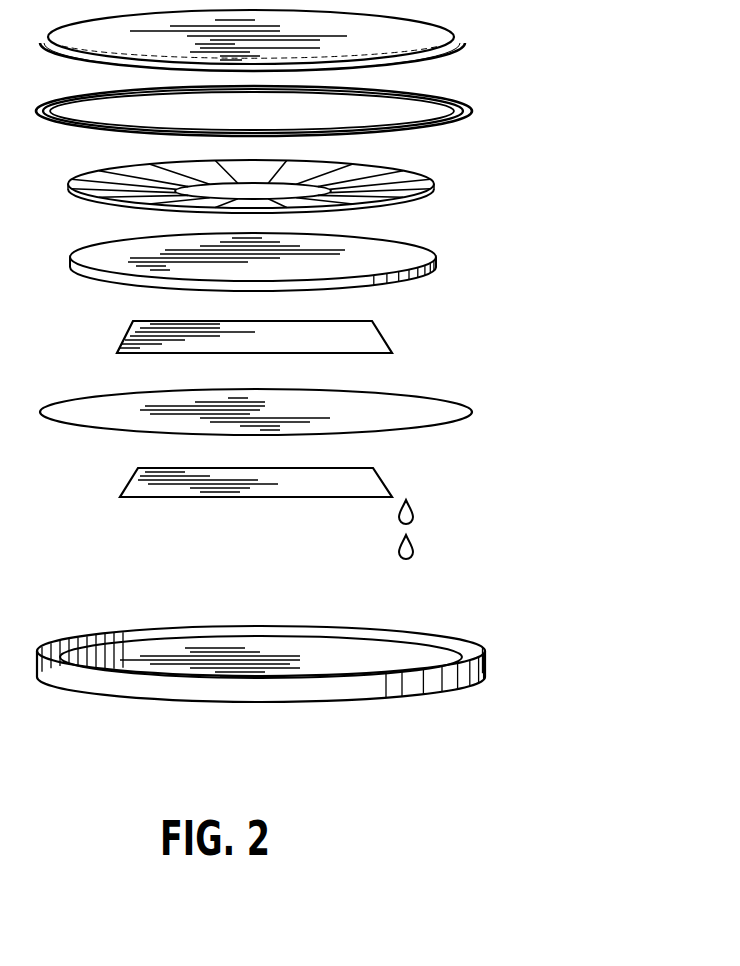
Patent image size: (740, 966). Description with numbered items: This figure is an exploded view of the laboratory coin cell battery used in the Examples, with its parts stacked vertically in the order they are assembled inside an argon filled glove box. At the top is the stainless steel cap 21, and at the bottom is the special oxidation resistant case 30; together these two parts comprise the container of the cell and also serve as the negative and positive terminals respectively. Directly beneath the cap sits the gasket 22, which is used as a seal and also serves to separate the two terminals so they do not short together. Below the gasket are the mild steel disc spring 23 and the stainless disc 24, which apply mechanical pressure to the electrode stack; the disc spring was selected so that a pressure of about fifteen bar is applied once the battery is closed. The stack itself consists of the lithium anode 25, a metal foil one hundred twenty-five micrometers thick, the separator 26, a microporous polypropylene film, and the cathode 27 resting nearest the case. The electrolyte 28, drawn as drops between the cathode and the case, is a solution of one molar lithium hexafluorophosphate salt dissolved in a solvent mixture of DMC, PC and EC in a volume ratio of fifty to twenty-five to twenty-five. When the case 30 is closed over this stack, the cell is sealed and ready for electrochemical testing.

The stainless steel cap 21 is at (475, 43).
The gasket 22 is at (482, 110).
The mild steel disc spring 23 is at (462, 173).
The stainless disc 24 is at (458, 258).
The lithium anode 25 is at (440, 332).
The separator 26 is at (482, 408).
The cathode 27 is at (433, 480).
The electrolyte 28 is at (430, 518).
The oxidation resistant case 30 is at (488, 663).